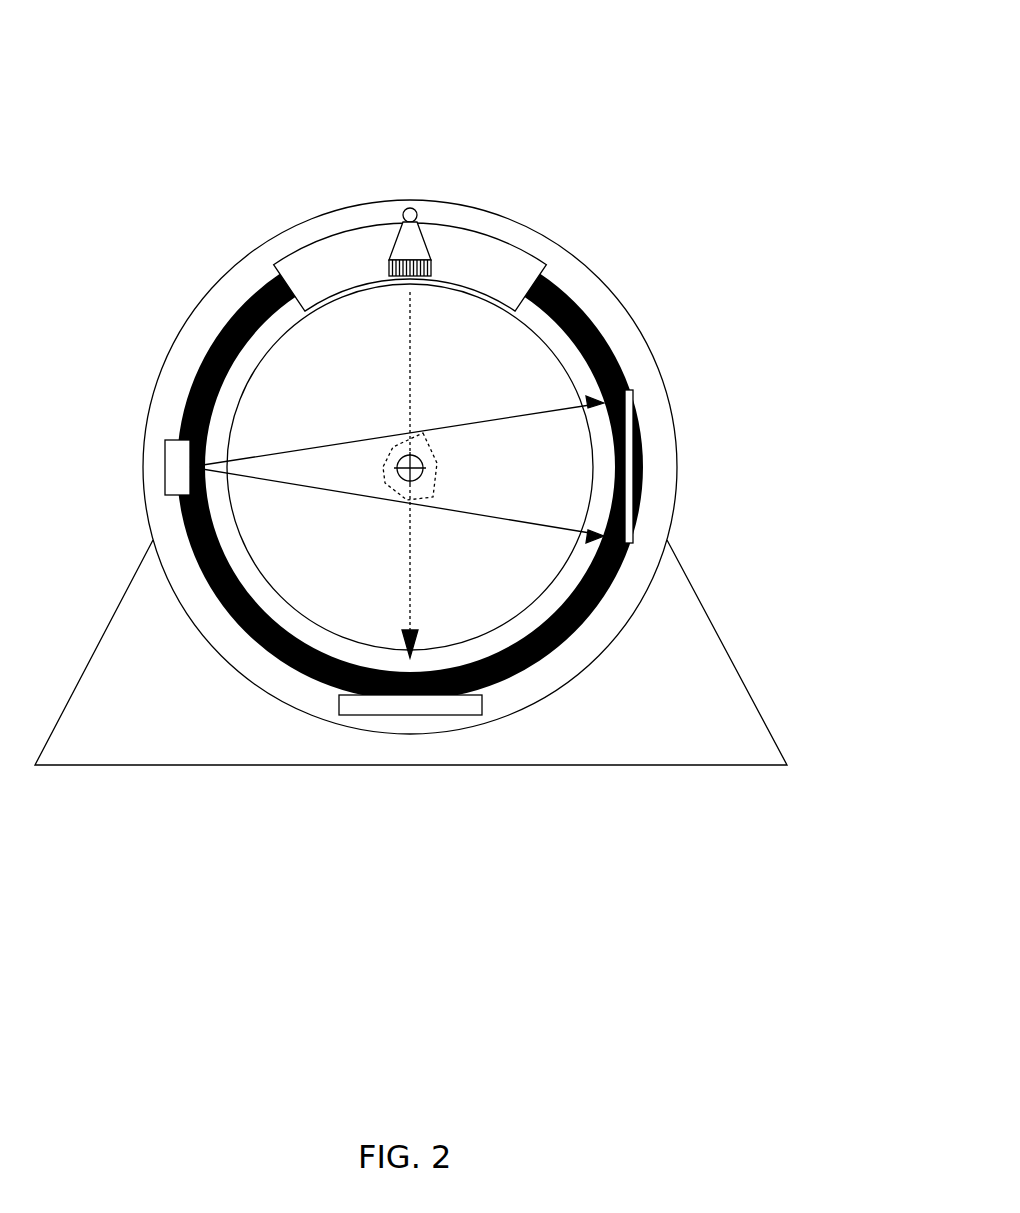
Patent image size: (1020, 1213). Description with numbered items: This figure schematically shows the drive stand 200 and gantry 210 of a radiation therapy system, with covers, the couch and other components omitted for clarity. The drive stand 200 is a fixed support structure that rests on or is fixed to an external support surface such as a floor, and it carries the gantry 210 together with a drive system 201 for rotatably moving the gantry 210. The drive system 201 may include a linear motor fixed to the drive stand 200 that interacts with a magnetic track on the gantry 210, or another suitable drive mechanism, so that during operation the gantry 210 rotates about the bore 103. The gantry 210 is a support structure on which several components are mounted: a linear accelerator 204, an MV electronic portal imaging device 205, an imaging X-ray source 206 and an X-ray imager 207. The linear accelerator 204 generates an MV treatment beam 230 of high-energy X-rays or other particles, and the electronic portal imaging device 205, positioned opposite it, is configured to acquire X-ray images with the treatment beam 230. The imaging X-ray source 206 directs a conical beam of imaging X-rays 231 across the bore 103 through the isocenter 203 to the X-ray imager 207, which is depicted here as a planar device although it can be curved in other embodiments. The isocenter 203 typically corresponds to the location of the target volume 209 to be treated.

The drive stand 200 is at (596, 69).
The drive system 201 is at (508, 243).
The isocenter 203 is at (423, 462).
The linear accelerator 204 is at (388, 214).
The MV electronic portal imaging device 205 is at (433, 715).
The imaging X-ray source 206 is at (165, 462).
The X-ray imager 207 is at (633, 393).
The target volume 209 is at (297, 268).
The gantry 210 is at (643, 467).
The MV treatment beam 230 is at (418, 616).
The imaging X-rays 231 is at (463, 515).
The bore 103 is at (410, 467).